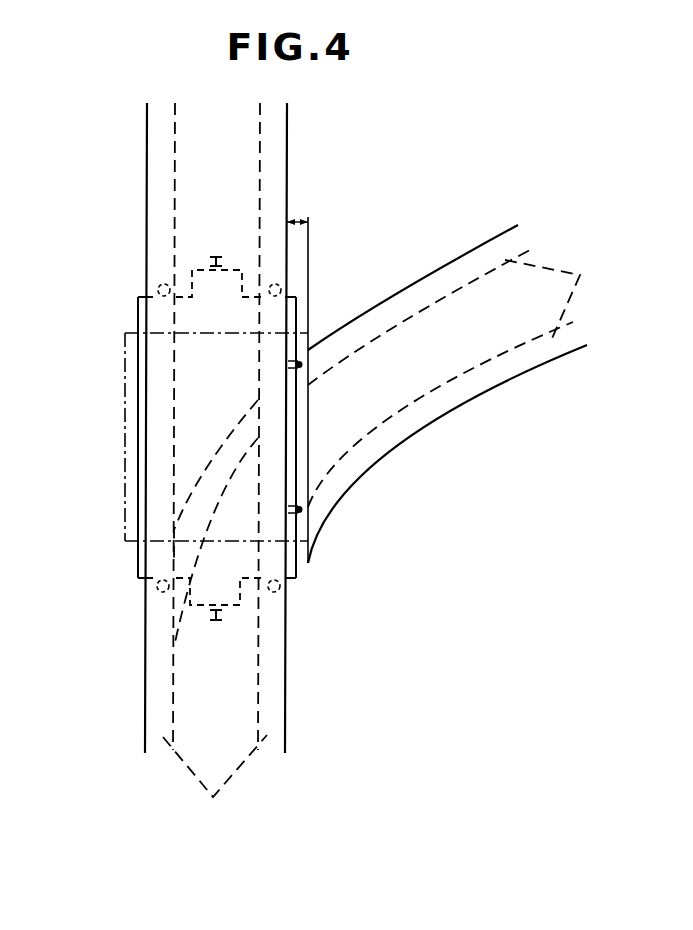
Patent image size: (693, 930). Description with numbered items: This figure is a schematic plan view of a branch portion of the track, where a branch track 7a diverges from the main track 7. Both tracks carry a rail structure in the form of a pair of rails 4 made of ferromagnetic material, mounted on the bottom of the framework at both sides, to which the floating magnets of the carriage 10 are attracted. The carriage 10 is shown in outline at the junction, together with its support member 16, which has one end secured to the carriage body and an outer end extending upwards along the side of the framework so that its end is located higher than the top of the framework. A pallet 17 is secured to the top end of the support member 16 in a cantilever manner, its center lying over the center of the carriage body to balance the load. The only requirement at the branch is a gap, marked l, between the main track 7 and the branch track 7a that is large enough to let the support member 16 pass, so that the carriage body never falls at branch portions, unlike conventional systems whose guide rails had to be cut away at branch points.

The rails 4 is at (387, 547).
The main track 7 is at (273, 697).
The branch track 7a is at (493, 383).
The carriage 10 is at (139, 415).
The support member 16 is at (303, 512).
The pallet 17 is at (128, 502).